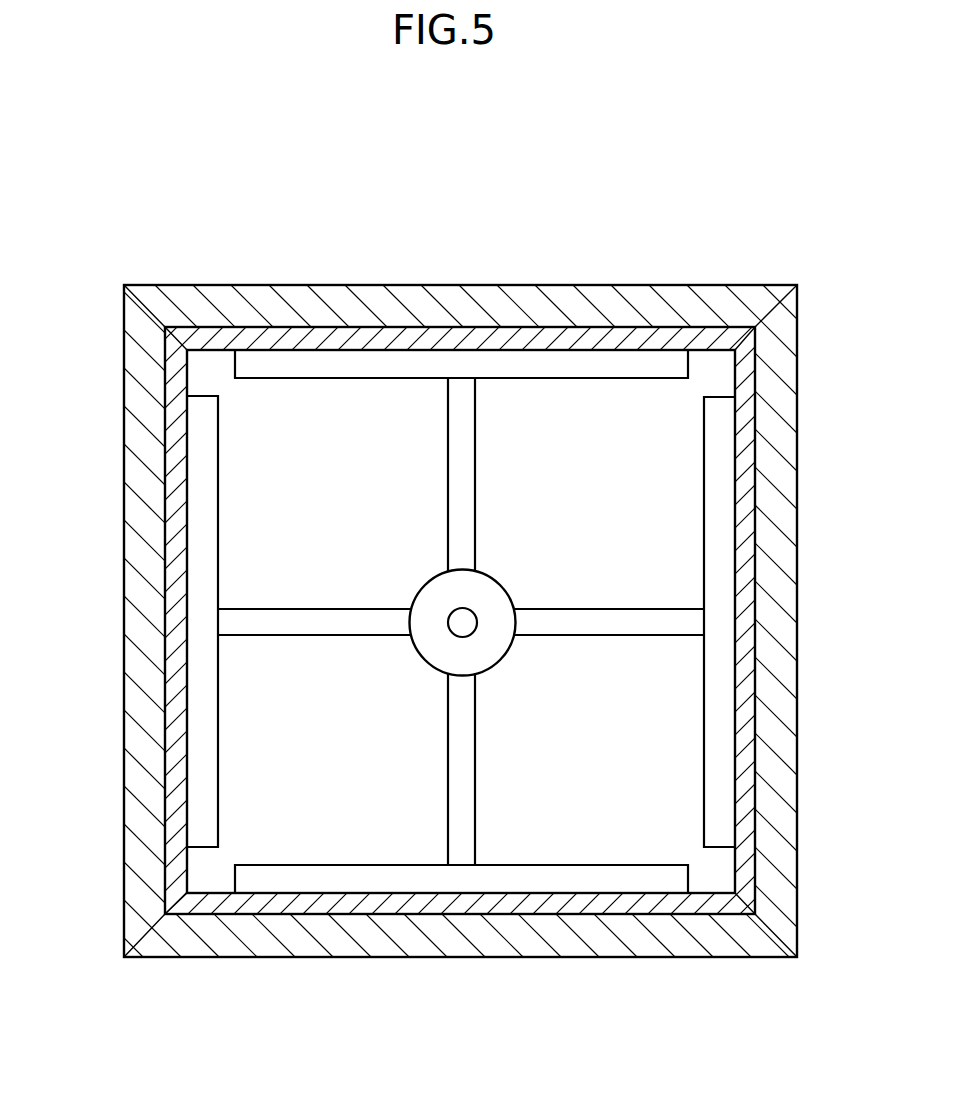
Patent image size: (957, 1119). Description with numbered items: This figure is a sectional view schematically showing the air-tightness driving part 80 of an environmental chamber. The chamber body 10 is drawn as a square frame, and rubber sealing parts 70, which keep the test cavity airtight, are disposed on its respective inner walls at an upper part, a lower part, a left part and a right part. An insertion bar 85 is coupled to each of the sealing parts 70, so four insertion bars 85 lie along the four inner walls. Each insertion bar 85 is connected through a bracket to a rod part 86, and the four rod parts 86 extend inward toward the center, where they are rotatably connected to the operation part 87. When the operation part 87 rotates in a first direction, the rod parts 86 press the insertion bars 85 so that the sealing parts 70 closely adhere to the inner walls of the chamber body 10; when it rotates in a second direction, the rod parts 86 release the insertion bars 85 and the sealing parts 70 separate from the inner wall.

The chamber body 10 is at (320, 307).
The sealing parts 70 is at (443, 340).
The air-tightness driving part 80 is at (432, 575).
The insertion bars 85 is at (528, 360).
The rod parts 86 is at (463, 493).
The operation part 87 is at (440, 656).